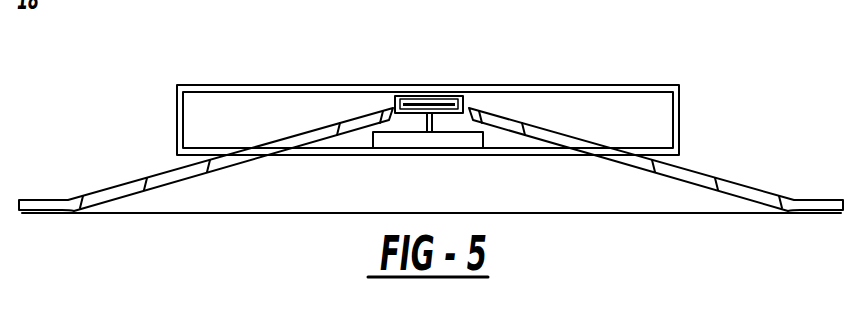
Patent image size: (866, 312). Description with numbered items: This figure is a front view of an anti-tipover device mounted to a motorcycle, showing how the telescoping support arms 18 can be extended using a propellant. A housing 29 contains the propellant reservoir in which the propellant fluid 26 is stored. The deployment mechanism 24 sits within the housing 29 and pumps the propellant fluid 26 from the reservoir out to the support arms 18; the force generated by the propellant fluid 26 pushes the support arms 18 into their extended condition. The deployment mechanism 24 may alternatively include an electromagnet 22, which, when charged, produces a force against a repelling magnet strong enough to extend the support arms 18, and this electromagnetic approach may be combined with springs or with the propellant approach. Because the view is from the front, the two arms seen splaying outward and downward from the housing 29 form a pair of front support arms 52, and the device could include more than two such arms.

The support arm 18 is at (748, 187).
The electromagnet 22 is at (444, 149).
The deployment mechanism 24 is at (427, 96).
The propellant fluid 26 is at (393, 149).
The housing 29 is at (682, 128).
The front support arm 52 is at (110, 186).